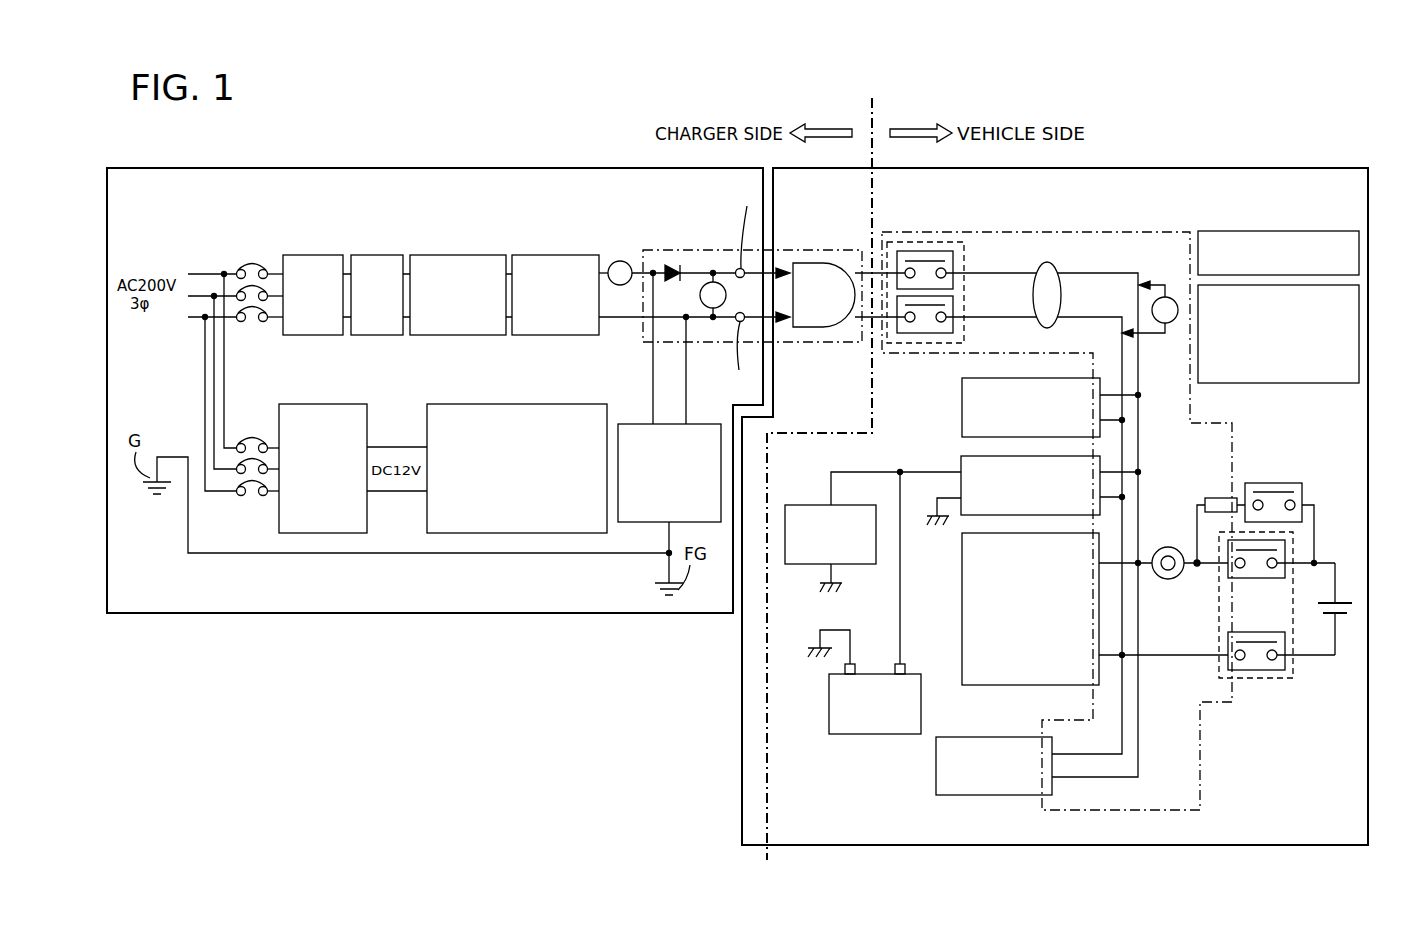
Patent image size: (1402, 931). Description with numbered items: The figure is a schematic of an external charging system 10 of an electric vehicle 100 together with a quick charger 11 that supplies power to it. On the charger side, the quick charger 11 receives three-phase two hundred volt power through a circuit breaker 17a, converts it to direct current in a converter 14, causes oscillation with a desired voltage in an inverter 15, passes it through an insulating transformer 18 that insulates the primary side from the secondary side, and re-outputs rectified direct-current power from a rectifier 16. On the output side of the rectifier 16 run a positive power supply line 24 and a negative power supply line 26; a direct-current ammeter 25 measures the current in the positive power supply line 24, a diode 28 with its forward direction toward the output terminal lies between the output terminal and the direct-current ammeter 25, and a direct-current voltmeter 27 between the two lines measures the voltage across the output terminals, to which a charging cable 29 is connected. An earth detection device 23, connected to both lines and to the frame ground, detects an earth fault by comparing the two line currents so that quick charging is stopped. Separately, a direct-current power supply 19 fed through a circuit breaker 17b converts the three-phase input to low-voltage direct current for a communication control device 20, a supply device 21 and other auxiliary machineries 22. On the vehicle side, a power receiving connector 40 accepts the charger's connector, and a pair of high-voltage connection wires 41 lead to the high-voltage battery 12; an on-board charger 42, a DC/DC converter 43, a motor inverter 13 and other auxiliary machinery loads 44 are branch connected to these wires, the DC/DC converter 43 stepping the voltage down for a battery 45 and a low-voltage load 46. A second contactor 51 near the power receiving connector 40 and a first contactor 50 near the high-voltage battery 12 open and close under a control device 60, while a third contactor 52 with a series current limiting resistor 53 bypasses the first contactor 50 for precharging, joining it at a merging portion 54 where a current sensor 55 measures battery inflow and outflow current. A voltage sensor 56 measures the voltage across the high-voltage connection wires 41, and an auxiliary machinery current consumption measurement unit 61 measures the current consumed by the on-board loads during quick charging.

The electric vehicle 100 is at (1110, 142).
The external charging system 10 is at (1188, 182).
The quick charger 11 is at (353, 186).
The high-voltage battery 12 is at (1346, 585).
The motor inverter 13 is at (962, 590).
The converter 14 is at (313, 255).
The inverter 15 is at (377, 255).
The rectifier 16 is at (555, 255).
The circuit breaker 17a is at (257, 252).
The circuit breaker 17b is at (255, 433).
The insulating transformer 18 is at (462, 255).
The direct-current power supply 19 is at (320, 404).
The communication control device 20 is at (517, 441).
The supply device 21 is at (517, 441).
The other auxiliary machineries 22 is at (505, 404).
The earth detection device 23 is at (632, 424).
The positive power supply line 24 is at (700, 270).
The direct-current ammeter 25 is at (620, 261).
The negative power supply line 26 is at (686, 322).
The direct-current voltmeter 27 is at (716, 282).
The diode 28 is at (668, 264).
The charging cable 29 is at (744, 276).
The power receiving connector 40 is at (815, 263).
The high-voltage connection wires 41 is at (1049, 252).
The on-board charger 42 is at (962, 402).
The DC/DC converter 43 is at (961, 462).
The other auxiliary machinery loads 44 is at (936, 770).
The battery 45 is at (860, 734).
The low-voltage load 46 is at (808, 505).
The first contactor 50 is at (1262, 678).
The second contactor 51 is at (930, 242).
The third contactor 52 is at (1272, 483).
The current limiting resistor 53 is at (1218, 497).
The merging portion 54 is at (1197, 575).
The current sensor 55 is at (1168, 547).
The voltage sensor 56 is at (1170, 323).
The control device 60 is at (1270, 231).
The auxiliary machinery current consumption measurement unit 61 is at (1320, 383).